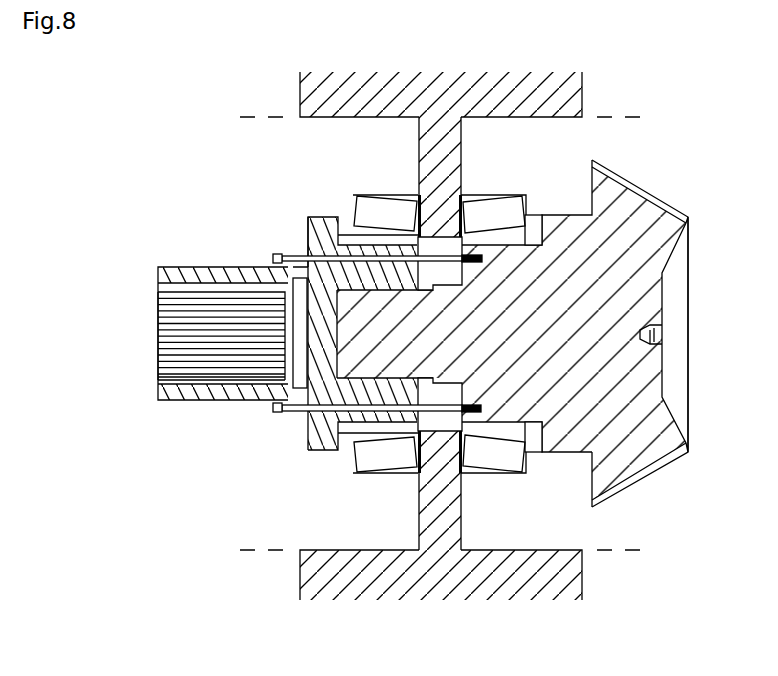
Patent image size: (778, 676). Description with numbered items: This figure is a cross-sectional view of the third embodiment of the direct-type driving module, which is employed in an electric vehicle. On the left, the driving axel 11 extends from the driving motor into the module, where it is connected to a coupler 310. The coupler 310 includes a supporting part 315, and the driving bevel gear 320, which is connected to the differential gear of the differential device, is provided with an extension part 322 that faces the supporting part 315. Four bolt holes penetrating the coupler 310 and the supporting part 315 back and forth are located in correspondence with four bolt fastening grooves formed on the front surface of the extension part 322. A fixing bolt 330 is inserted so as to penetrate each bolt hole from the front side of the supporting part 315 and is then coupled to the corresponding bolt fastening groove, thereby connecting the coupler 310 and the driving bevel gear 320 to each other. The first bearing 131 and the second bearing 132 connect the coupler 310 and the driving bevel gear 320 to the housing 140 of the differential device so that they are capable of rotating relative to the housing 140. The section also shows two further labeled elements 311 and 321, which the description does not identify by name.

The driving axel 11 is at (165, 348).
The first bearing 131 is at (380, 195).
The second bearing 132 is at (469, 199).
The housing 140 is at (453, 133).
The coupler 310 is at (345, 397).
The motor housing 311 is at (176, 393).
The supporting part 315 is at (306, 256).
The driving bevel gear 320 is at (432, 352).
The flange 321 is at (616, 188).
The extension part 322 is at (502, 257).
The fixing bolt 330 is at (293, 417).